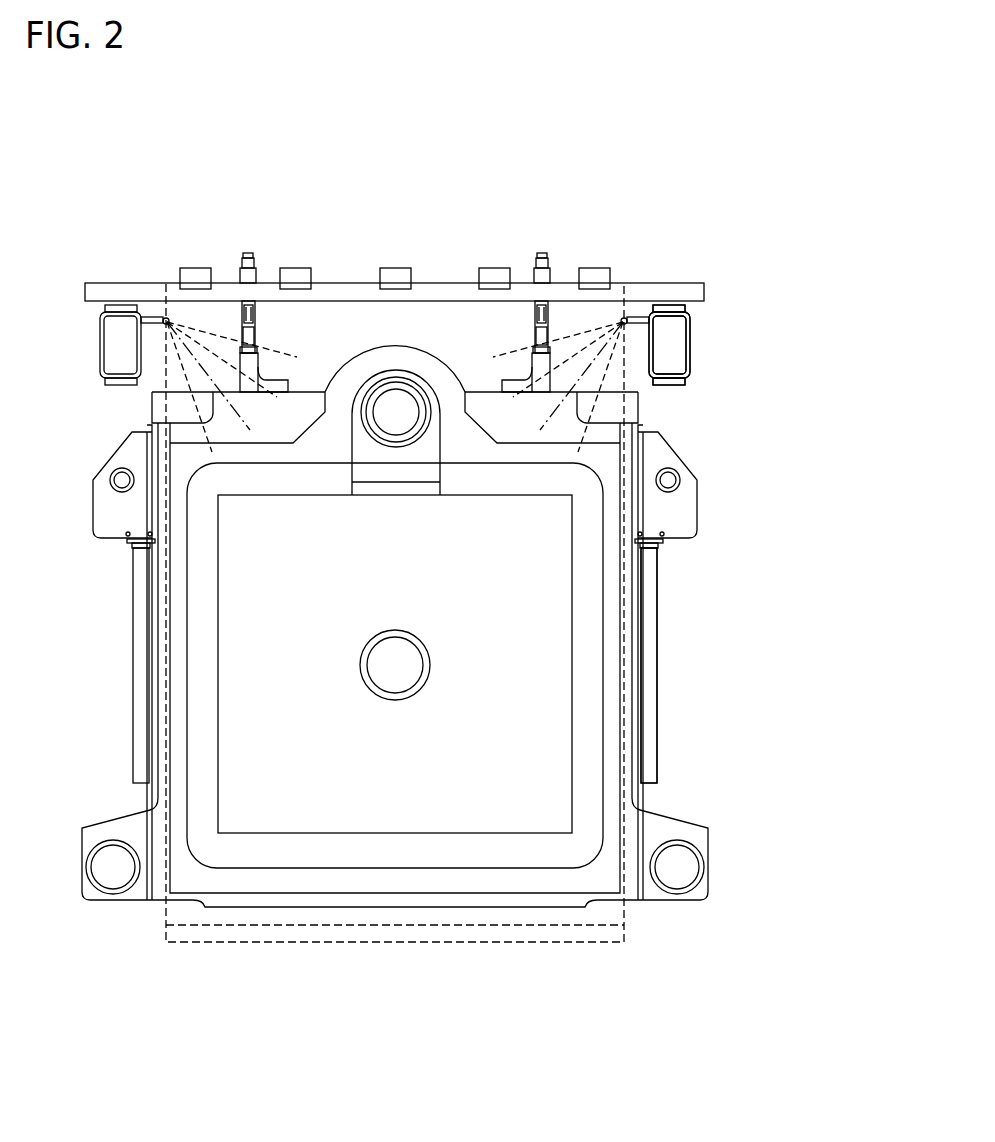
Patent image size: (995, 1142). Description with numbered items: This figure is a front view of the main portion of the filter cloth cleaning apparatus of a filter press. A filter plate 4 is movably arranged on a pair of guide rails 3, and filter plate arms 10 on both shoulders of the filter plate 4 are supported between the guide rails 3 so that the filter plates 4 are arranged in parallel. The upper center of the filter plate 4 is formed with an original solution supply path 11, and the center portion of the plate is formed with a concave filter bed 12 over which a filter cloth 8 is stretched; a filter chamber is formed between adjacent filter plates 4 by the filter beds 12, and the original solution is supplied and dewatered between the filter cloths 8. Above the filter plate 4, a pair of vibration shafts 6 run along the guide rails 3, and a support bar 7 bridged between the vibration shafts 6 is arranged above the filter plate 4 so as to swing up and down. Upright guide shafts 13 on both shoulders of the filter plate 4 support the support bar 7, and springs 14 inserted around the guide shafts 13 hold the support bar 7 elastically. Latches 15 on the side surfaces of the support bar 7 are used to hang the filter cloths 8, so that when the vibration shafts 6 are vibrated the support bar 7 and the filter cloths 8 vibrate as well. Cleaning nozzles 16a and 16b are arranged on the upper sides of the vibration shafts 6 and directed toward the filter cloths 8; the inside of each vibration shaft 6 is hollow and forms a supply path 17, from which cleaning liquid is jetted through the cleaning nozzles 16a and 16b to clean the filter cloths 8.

The guide rail 3 is at (645, 672).
The filter plate 4 is at (175, 512).
The vibration shaft 6 is at (688, 330).
The support bar 7 is at (357, 288).
The filter cloth 8 is at (617, 912).
The filter plate arm 10 is at (685, 497).
The original solution supply path 11 is at (383, 407).
The filter bed 12 is at (240, 614).
The guide shaft 13 is at (543, 253).
The spring 14 is at (238, 327).
The latch 15 is at (293, 272).
The cleaning nozzle 16a is at (166, 318).
The cleaning nozzle 16b is at (622, 320).
The supply path 17 is at (673, 362).